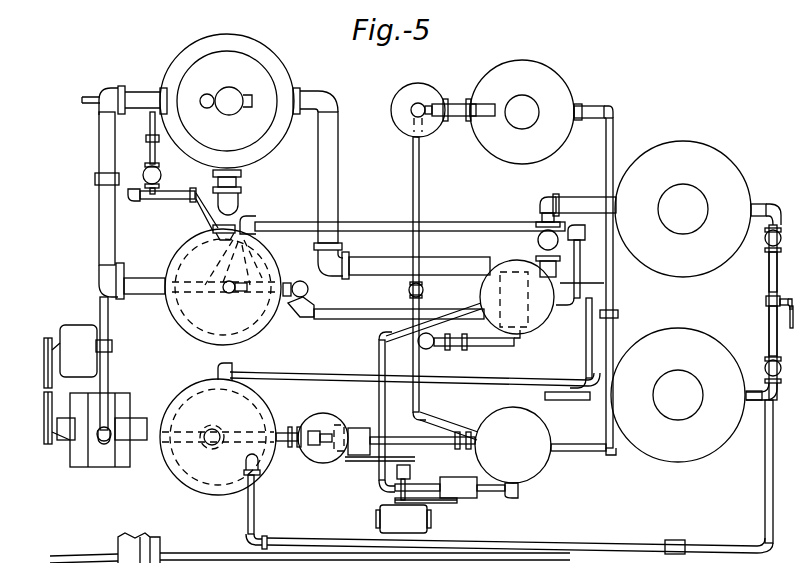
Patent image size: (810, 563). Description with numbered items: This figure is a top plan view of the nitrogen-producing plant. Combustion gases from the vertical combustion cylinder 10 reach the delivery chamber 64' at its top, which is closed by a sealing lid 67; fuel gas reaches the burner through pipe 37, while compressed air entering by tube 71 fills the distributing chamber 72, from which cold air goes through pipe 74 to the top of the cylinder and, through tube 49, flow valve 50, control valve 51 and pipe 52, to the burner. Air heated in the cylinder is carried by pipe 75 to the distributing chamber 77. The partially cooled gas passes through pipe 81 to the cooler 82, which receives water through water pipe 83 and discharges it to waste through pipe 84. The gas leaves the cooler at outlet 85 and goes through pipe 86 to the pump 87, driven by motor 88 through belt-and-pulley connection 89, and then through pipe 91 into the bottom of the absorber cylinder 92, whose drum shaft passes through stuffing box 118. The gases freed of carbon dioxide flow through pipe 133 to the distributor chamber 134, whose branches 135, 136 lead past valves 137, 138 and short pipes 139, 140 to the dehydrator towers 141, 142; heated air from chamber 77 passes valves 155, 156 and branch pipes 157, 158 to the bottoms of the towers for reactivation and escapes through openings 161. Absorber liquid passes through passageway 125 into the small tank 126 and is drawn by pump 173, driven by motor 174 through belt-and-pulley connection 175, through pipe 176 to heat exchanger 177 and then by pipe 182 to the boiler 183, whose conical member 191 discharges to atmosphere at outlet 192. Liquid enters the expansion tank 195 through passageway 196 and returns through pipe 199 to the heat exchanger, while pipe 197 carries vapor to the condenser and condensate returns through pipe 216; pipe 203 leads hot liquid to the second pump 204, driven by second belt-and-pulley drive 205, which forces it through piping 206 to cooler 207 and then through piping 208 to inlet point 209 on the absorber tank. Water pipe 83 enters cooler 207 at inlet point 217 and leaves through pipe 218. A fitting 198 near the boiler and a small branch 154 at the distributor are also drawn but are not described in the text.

The cylinder 10 is at (177, 74).
The delivery chamber 64' is at (243, 101).
The sealing lid 67 is at (228, 87).
The pipe 37 is at (88, 106).
The pipe 81 is at (97, 236).
The pipe 86 is at (110, 314).
The motor 88 is at (63, 322).
The belt-and-pulley connection 89 is at (46, 372).
The pump 87 is at (103, 462).
The pipe 91 is at (154, 442).
The pipe 52 is at (150, 126).
The control valve 51 is at (162, 174).
The flow valve 50 is at (132, 202).
The tube 49 is at (195, 203).
The tube 71 is at (208, 236).
The distributing chamber 72 is at (228, 250).
The pipe 74 is at (242, 180).
The cooler 82 is at (265, 335).
The pipe 84 is at (232, 296).
The outlet 85 is at (297, 282).
The water pipe 83 is at (262, 220).
The pipe 75 is at (316, 156).
The expansion tank 195 is at (400, 95).
The pipe 197 is at (410, 112).
The passageway 196 is at (455, 118).
The drive shaft 198 is at (478, 128).
The conical member 191 is at (560, 80).
The boiler 183 is at (573, 92).
The discharge outlet 192 is at (532, 126).
The pipe 182 is at (614, 125).
The branch pipe 158 is at (587, 196).
The valve 156 is at (535, 240).
The distributing chamber 77 is at (562, 270).
The inlet point 217 is at (598, 280).
The piping 208 is at (350, 382).
The valve 155 is at (552, 334).
The branch pipe 157 is at (578, 401).
The cooler 207 is at (480, 294).
The pipe 216 is at (409, 290).
The piping 206 is at (377, 340).
The pipe 218 is at (428, 350).
The pipe 199 is at (420, 203).
The inlet point 209 is at (215, 370).
The absorber cylinder 92 is at (178, 398).
The stuffing box 118 is at (220, 430).
The passageway 125 is at (286, 448).
The small tank 126 is at (324, 464).
The pump 173 is at (357, 427).
The pipe 176 is at (416, 446).
The belt-and-pulley connection 175 is at (376, 468).
The motor 174 is at (378, 522).
The second pump 204 is at (475, 500).
The pipe 203 is at (515, 498).
The second belt-and-pulley drive 205 is at (441, 500).
The heat exchanger 177 is at (548, 460).
The pipe 133 is at (258, 498).
The short pipe 140 is at (757, 203).
The valve 138 is at (768, 246).
The branch 136 is at (769, 276).
The distributor chamber 134 is at (766, 302).
The branch 154 is at (787, 310).
The branch 135 is at (769, 322).
The valve 137 is at (766, 372).
The short pipe 139 is at (748, 405).
The dehydrator tower 142 is at (707, 152).
The opening 161 is at (687, 188).
The dehydrator tower 141 is at (703, 462).